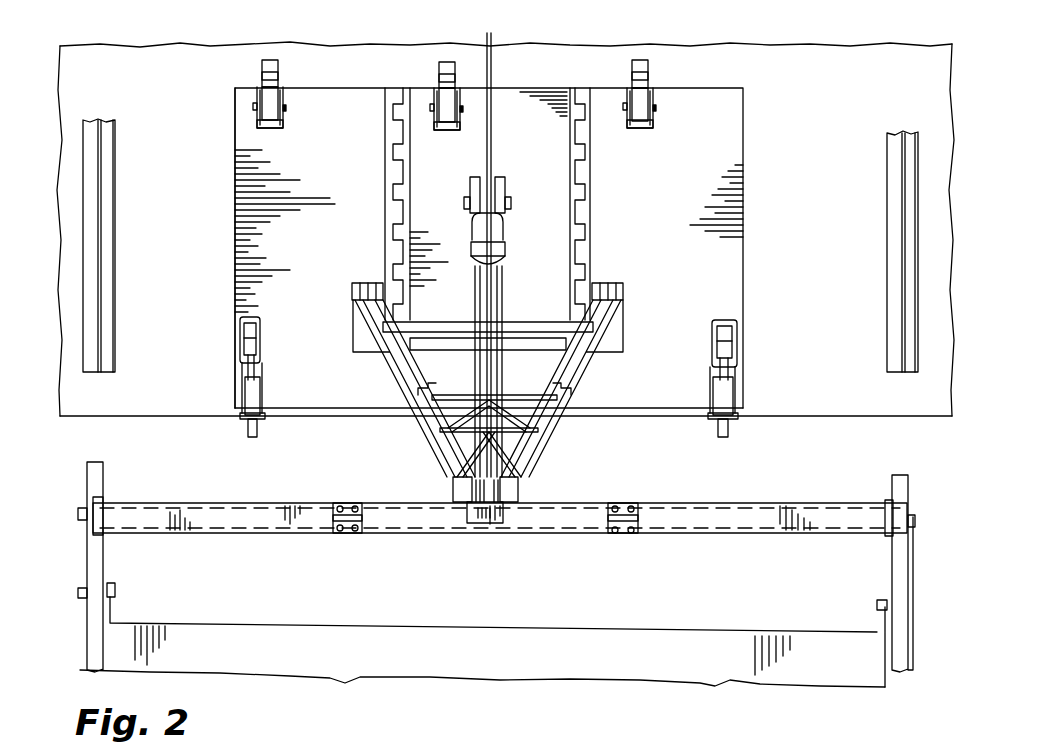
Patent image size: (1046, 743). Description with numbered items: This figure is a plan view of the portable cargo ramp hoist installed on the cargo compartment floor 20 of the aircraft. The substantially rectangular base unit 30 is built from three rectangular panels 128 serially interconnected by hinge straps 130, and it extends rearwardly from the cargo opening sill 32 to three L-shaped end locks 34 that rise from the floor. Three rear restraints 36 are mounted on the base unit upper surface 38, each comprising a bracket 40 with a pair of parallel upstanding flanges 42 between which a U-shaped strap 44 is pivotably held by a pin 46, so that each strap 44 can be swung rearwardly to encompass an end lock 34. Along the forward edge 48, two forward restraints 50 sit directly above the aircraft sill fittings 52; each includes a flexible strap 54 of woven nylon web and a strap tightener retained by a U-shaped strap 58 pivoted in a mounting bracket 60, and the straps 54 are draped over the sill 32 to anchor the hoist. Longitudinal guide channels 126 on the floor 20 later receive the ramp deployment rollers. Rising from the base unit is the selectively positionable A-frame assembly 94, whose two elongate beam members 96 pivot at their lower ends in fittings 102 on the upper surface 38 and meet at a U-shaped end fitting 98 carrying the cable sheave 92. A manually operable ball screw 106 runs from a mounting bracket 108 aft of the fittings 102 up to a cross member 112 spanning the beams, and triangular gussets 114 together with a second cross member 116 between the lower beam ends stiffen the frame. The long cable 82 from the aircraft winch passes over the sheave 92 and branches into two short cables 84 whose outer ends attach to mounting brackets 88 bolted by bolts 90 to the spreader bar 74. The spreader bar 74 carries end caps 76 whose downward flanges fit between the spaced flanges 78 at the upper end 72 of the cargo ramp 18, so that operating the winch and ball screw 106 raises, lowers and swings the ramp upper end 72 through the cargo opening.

The cargo ramp 18 is at (800, 668).
The cargo compartment floor 20 is at (866, 54).
The base unit 30 is at (730, 122).
The cargo opening sill 32 is at (648, 417).
The end lock 34 is at (265, 63).
The rear restraint 36 is at (286, 100).
The base unit upper surface 38 is at (240, 205).
The bracket 40 is at (270, 125).
The flange 42 is at (284, 124).
The U-shaped strap 44 is at (280, 76).
The pin 46 is at (253, 106).
The forward edge 48 is at (340, 418).
The forward restraint 50 is at (244, 369).
The aircraft sill fitting 52 is at (253, 438).
The flexible strap 54 is at (258, 406).
The U-shaped strap 58 is at (245, 363).
The mounting bracket 60 is at (250, 318).
The cargo ramp upper end 72 is at (104, 472).
The spreader bar 74 is at (237, 534).
The cap 76 is at (105, 500).
The flange 78 is at (86, 534).
The cable 82 is at (493, 150).
The cable 84 is at (412, 534).
The mounting bracket 88 is at (347, 534).
The bolt 90 is at (354, 503).
The cable sheave 92 is at (455, 487).
The A-frame assembly 94 is at (598, 376).
The beam member 96 is at (405, 374).
The end fitting 98 is at (505, 512).
The fitting 102 is at (362, 283).
The ball screw 106 is at (503, 282).
The mounting bracket 108 is at (506, 190).
The cross member 112 is at (545, 395).
The triangular gusset 114 is at (455, 400).
The second cross member 116 is at (527, 322).
The guide channel 126 is at (96, 118).
The rectangular panel 128 is at (240, 268).
The hinge strap 130 is at (398, 92).